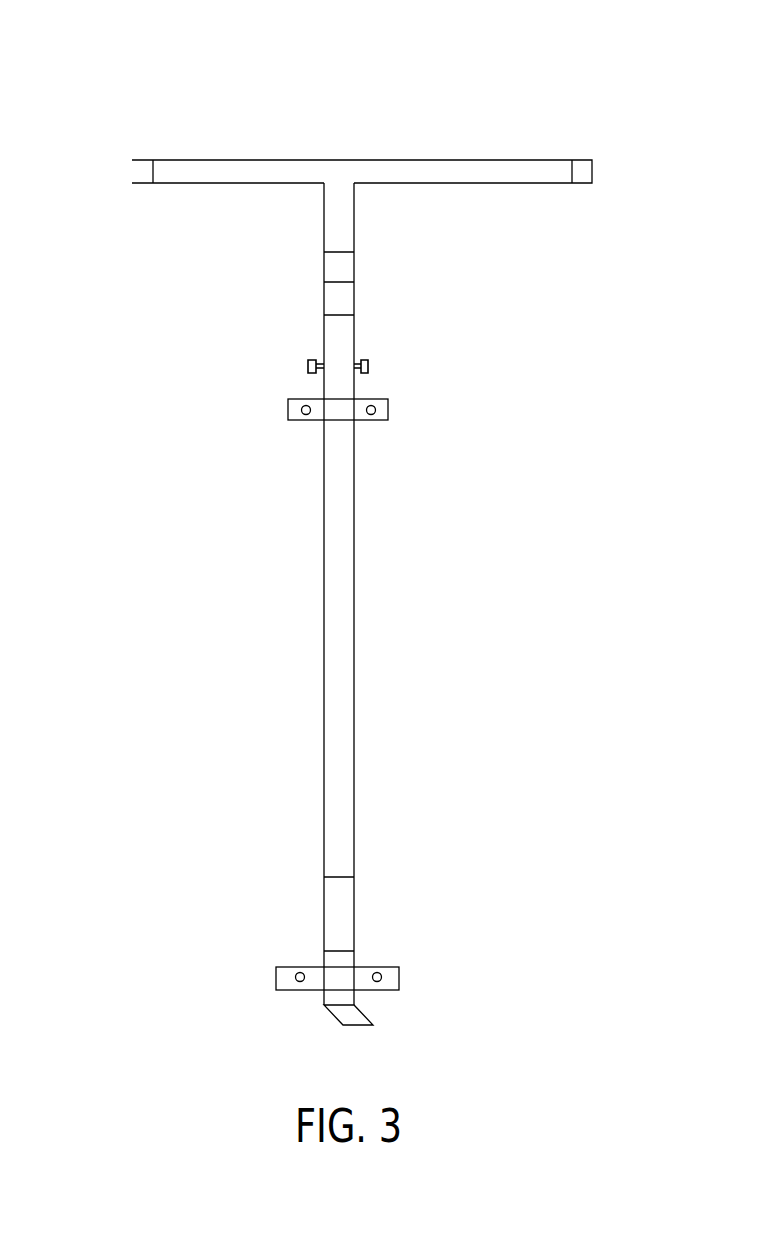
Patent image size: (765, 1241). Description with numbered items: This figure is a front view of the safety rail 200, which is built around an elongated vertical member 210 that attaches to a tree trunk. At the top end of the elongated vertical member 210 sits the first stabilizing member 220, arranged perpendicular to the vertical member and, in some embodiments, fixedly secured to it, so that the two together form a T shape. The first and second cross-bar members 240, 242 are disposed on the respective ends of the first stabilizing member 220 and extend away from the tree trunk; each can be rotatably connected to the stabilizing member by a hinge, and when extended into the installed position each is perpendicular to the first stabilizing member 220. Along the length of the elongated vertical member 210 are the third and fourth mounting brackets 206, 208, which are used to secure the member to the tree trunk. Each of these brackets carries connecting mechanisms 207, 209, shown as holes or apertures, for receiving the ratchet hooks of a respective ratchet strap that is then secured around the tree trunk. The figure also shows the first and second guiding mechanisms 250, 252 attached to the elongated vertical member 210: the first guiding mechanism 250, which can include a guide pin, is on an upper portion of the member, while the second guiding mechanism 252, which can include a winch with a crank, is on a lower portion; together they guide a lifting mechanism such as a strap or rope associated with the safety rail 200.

The safety rail 200 is at (453, 70).
The first stabilizing member 220 is at (397, 160).
The second cross-bar member 242 is at (132, 170).
The first cross-bar member 240 is at (594, 165).
The elongated vertical member 210 is at (355, 678).
The first guiding mechanism 250 is at (337, 269).
The second guiding mechanism 252 is at (340, 900).
The third mounting bracket 206 is at (376, 421).
The connecting mechanism 207 is at (371, 421).
The fourth mounting bracket 208 is at (378, 991).
The connecting mechanism 209 is at (377, 991).